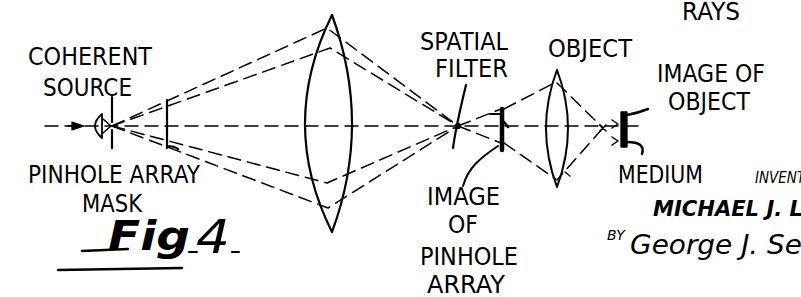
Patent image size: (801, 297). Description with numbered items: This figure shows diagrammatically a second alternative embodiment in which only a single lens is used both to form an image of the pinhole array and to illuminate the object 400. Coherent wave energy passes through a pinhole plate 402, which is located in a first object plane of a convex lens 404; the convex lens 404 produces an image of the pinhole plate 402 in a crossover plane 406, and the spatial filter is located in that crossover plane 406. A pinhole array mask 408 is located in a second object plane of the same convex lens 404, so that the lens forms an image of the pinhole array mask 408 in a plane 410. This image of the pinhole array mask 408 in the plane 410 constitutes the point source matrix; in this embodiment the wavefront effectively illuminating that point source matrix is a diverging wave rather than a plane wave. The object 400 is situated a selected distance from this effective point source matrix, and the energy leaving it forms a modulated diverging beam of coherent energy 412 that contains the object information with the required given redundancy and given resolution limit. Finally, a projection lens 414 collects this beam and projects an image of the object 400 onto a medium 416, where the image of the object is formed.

The object 400 is at (509, 124).
The pinhole plate 402 is at (114, 107).
The convex lens 404 is at (333, 231).
The crossover plane 406 is at (545, 248).
The pinhole array mask 408 is at (167, 108).
The plane 410 is at (500, 110).
The modulated diverging beam of coherent energy 412 is at (532, 165).
The projection lens 414 is at (556, 186).
The medium 416 is at (628, 130).